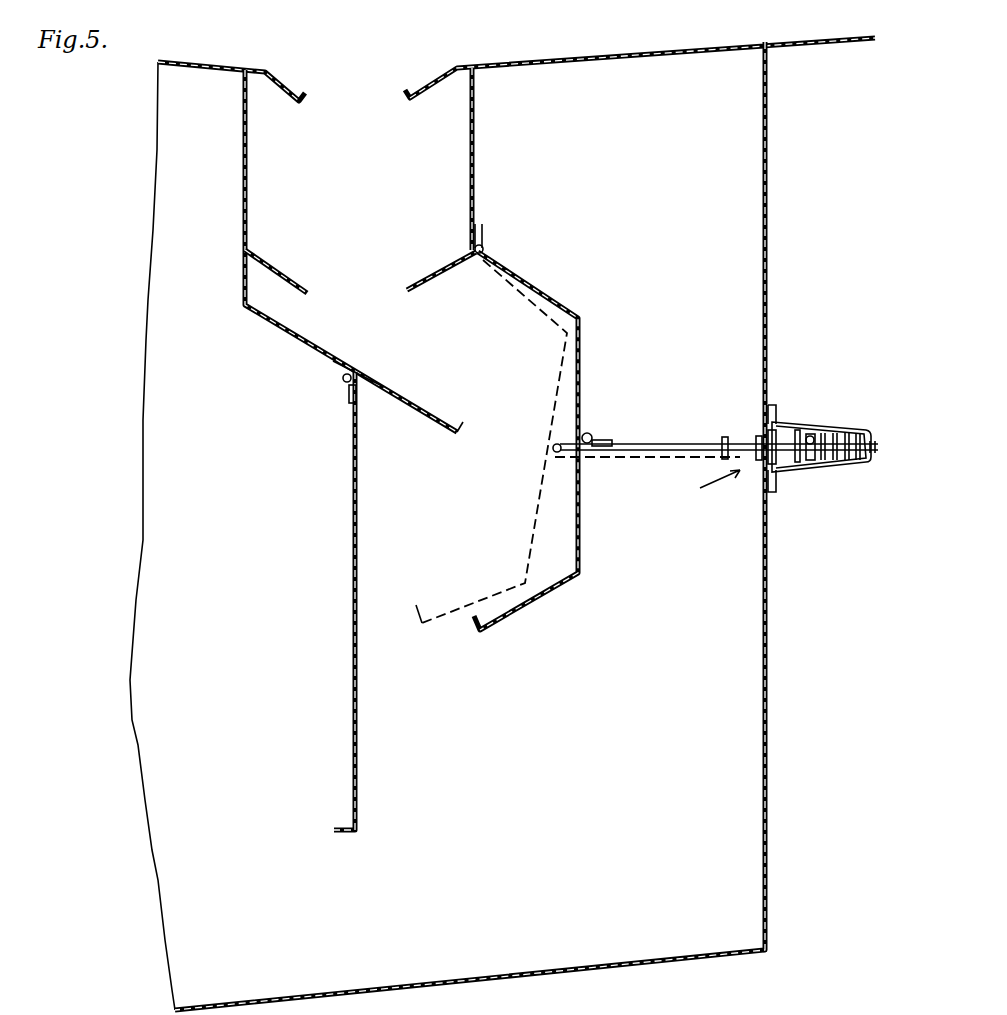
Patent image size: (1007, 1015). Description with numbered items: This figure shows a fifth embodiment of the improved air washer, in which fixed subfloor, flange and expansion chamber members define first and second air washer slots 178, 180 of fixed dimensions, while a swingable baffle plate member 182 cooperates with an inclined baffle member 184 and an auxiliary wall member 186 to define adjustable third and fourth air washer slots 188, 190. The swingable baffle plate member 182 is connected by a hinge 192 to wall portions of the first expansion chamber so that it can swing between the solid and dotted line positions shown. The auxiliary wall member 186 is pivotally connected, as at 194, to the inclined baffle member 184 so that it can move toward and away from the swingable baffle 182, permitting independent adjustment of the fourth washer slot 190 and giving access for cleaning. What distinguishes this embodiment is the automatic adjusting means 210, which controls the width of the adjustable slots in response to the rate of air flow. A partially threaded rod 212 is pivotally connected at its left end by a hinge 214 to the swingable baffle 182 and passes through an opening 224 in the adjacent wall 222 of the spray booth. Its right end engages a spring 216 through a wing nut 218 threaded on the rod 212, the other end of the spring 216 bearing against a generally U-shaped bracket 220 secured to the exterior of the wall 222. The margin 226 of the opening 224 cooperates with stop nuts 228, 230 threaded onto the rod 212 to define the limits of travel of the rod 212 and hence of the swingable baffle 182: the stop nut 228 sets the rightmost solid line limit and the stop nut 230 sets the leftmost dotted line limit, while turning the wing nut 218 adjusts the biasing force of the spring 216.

The first air washer slot 178 is at (378, 118).
The second air washer slot 180 is at (380, 305).
The swingable baffle plate member 182 is at (580, 380).
The inclined baffle member 184 is at (383, 386).
The auxiliary wall member 186 is at (352, 538).
The third air washer slot 188 is at (520, 455).
The fourth air washer slot 190 is at (430, 655).
The hinge 192 is at (486, 250).
The pivotal connection 194 is at (342, 388).
The automatic adjusting means 210 is at (692, 495).
The partially threaded rod 212 is at (632, 455).
The hinge 214 is at (598, 437).
The spring 216 is at (842, 463).
The wing nut 218 is at (806, 463).
The U-shaped bracket 220 is at (800, 425).
The wall 222 is at (768, 633).
The opening 224 is at (760, 466).
The margin 226 is at (770, 468).
The stop nut 228 is at (758, 441).
The stop nut 230 is at (786, 436).